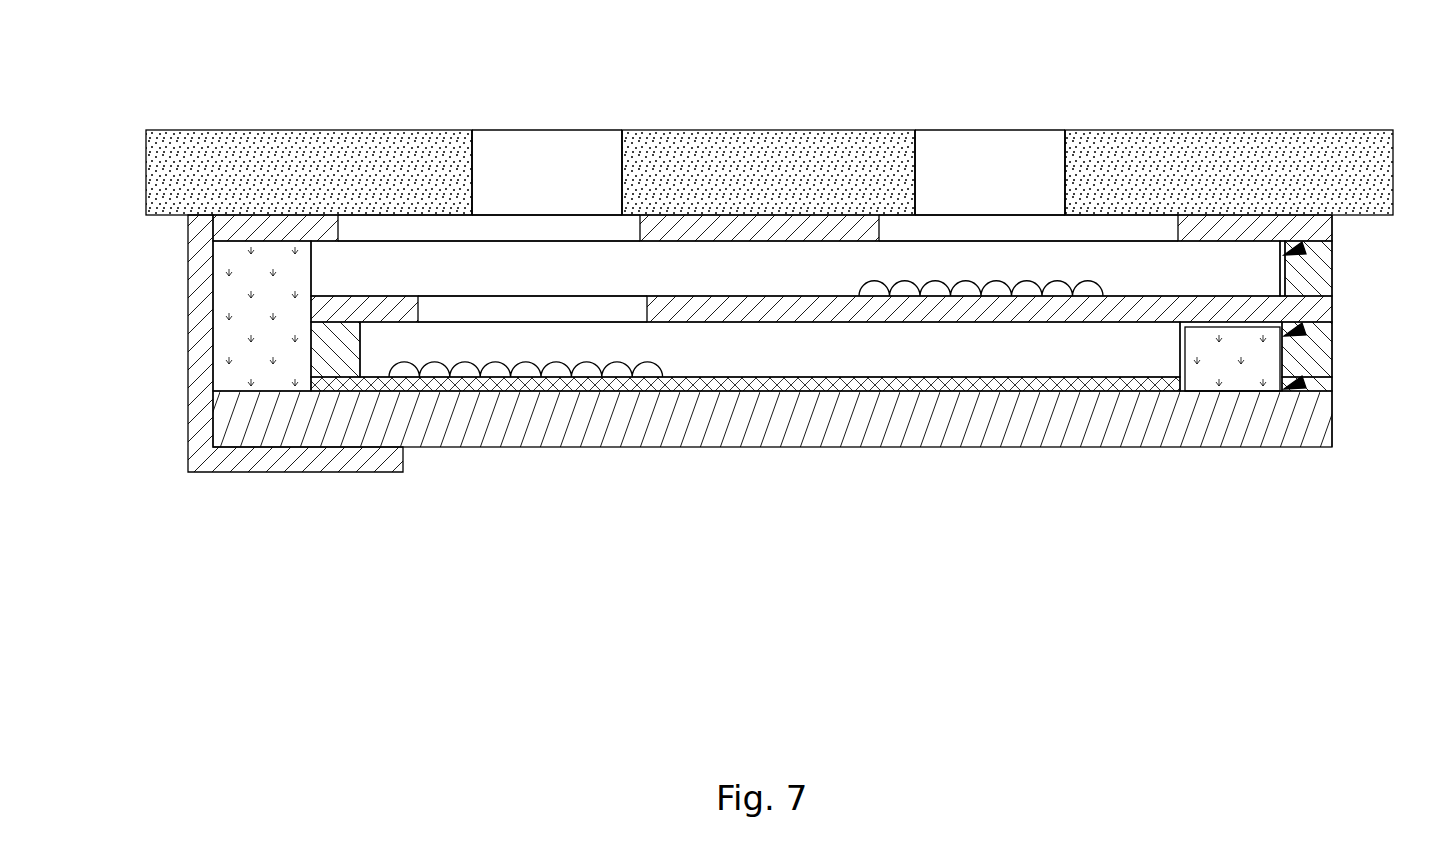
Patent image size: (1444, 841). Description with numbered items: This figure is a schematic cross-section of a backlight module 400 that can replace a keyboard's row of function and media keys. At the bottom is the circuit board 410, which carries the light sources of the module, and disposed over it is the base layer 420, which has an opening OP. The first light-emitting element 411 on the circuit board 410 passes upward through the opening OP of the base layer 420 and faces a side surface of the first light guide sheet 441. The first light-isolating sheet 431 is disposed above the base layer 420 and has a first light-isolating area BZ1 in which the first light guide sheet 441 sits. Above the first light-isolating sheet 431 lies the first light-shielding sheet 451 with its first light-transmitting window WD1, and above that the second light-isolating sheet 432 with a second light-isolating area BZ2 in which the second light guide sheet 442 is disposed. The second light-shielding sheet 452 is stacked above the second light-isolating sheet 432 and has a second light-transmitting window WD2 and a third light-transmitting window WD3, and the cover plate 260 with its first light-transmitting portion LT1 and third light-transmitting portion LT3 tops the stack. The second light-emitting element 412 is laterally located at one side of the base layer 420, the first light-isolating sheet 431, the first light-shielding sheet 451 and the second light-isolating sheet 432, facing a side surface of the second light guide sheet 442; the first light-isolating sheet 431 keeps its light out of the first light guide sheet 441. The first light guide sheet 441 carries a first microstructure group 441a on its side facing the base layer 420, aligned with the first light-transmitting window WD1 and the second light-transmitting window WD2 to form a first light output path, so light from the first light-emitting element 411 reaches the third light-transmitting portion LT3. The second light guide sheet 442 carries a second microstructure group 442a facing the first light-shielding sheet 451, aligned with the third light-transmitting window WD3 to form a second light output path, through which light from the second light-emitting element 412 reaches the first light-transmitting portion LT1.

The backlight module 400 is at (120, 58).
The cover plate 260 is at (314, 150).
The second light-transmitting window WD2 is at (541, 225).
The third light-transmitting portion LT3 is at (590, 150).
The third light-transmitting window WD3 is at (978, 230).
The first light-transmitting portion LT1 is at (1030, 150).
The second light guide sheet 442 is at (1146, 255).
The second microstructure group 442a is at (875, 292).
The second light-shielding sheet 452 is at (197, 280).
The second light-emitting element 412 is at (232, 325).
The second light-isolating area BZ2 is at (1303, 247).
The second light-isolating sheet 432 is at (1325, 278).
The first light-shielding sheet 451 is at (1320, 308).
The first light guide sheet 441 is at (657, 348).
The first microstructure group 441a is at (433, 372).
The first light-transmitting window WD1 is at (565, 314).
The base layer 420 is at (757, 385).
The first light-emitting element 411 is at (1240, 383).
The first light-isolating area BZ1 is at (1303, 330).
The first light-isolating sheet 431 is at (1325, 355).
The opening OP is at (1303, 383).
The circuit board 410 is at (487, 432).